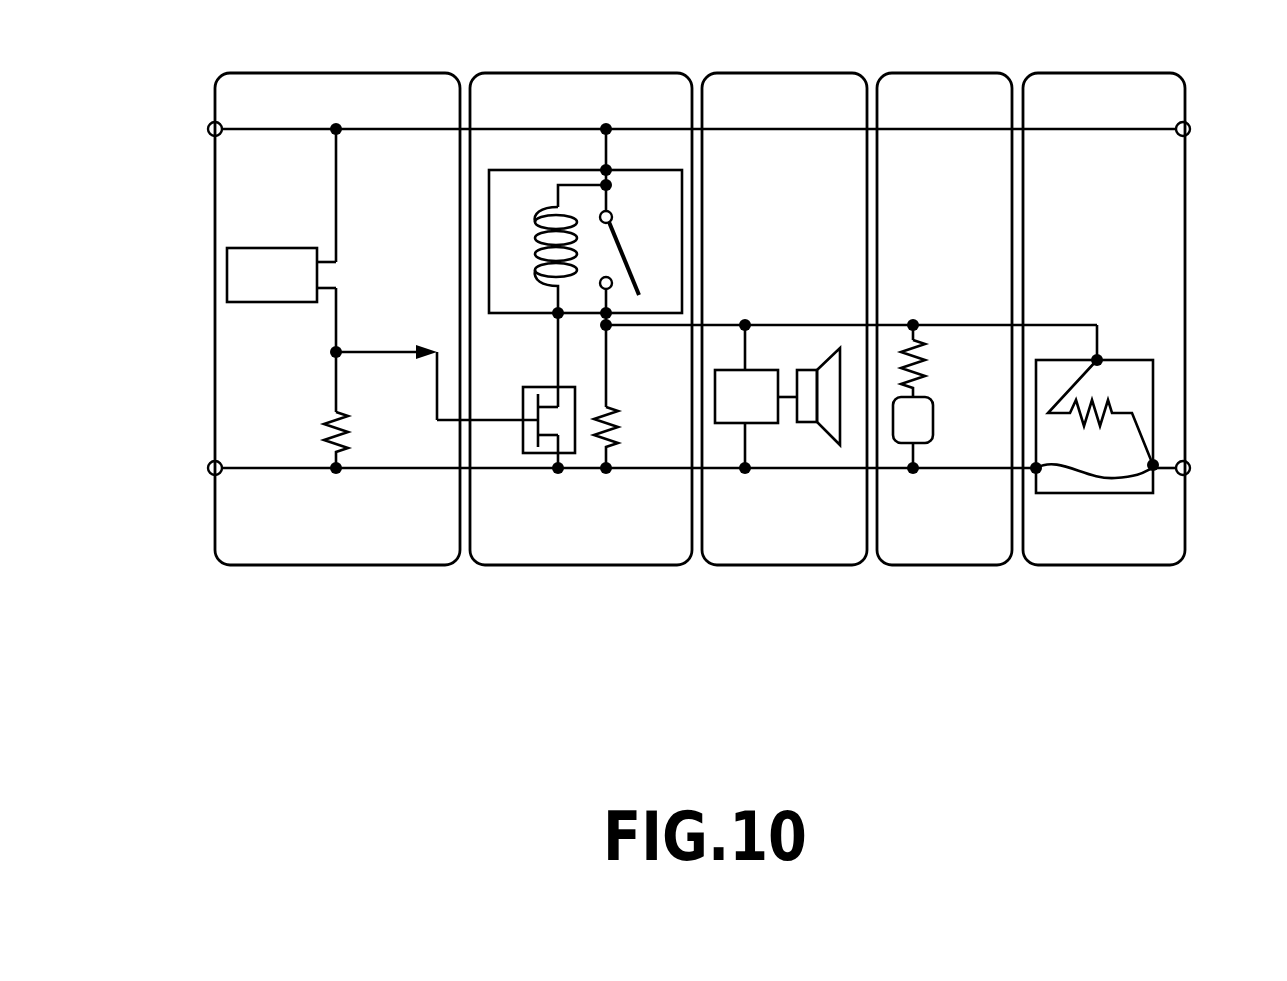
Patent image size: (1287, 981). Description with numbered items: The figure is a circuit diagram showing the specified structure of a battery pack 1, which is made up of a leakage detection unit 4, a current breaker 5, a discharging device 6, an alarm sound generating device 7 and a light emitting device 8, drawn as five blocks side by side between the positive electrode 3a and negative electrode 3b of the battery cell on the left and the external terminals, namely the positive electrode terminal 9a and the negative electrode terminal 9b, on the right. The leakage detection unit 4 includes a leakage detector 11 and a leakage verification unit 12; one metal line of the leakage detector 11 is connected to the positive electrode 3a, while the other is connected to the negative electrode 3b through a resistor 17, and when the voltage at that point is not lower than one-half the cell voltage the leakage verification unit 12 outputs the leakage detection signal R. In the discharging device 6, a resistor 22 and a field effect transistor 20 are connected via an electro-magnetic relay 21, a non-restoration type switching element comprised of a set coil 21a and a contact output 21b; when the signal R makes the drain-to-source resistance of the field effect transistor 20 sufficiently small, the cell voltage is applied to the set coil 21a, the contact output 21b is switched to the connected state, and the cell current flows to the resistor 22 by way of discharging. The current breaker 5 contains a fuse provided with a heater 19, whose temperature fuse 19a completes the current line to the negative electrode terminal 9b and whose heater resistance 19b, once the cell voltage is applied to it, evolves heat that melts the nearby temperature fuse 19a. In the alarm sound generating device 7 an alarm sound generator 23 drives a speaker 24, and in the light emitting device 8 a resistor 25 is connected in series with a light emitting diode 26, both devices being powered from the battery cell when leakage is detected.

The battery pack 1 is at (697, 399).
The positive electrode 3a is at (208, 129).
The negative electrode 3b is at (208, 468).
The leakage detection unit 4 is at (321, 566).
The current breaker 5 is at (1086, 566).
The discharging device 6 is at (549, 566).
The alarm sound generating device 7 is at (761, 566).
The light emitting device 8 is at (923, 566).
The positive electrode terminal 9a is at (1190, 129).
The negative electrode terminal 9b is at (1190, 468).
The leakage detector 11 is at (272, 248).
The leakage verification unit 12 is at (370, 276).
The resistor 17 is at (356, 438).
The fuse provided with a heater 19 is at (1143, 427).
The temperature fuse 19a is at (1105, 395).
The heater resistance 19b is at (1117, 478).
The field effect transistor 20 is at (530, 455).
The electro-magnetic relay 21 is at (585, 232).
The set coil 21a is at (535, 218).
The contact output 21b is at (628, 250).
The resistor 22 is at (628, 440).
The alarm sound generator 23 is at (768, 425).
The speaker 24 is at (825, 432).
The resistor 25 is at (928, 360).
The light emitting diode 26 is at (934, 412).